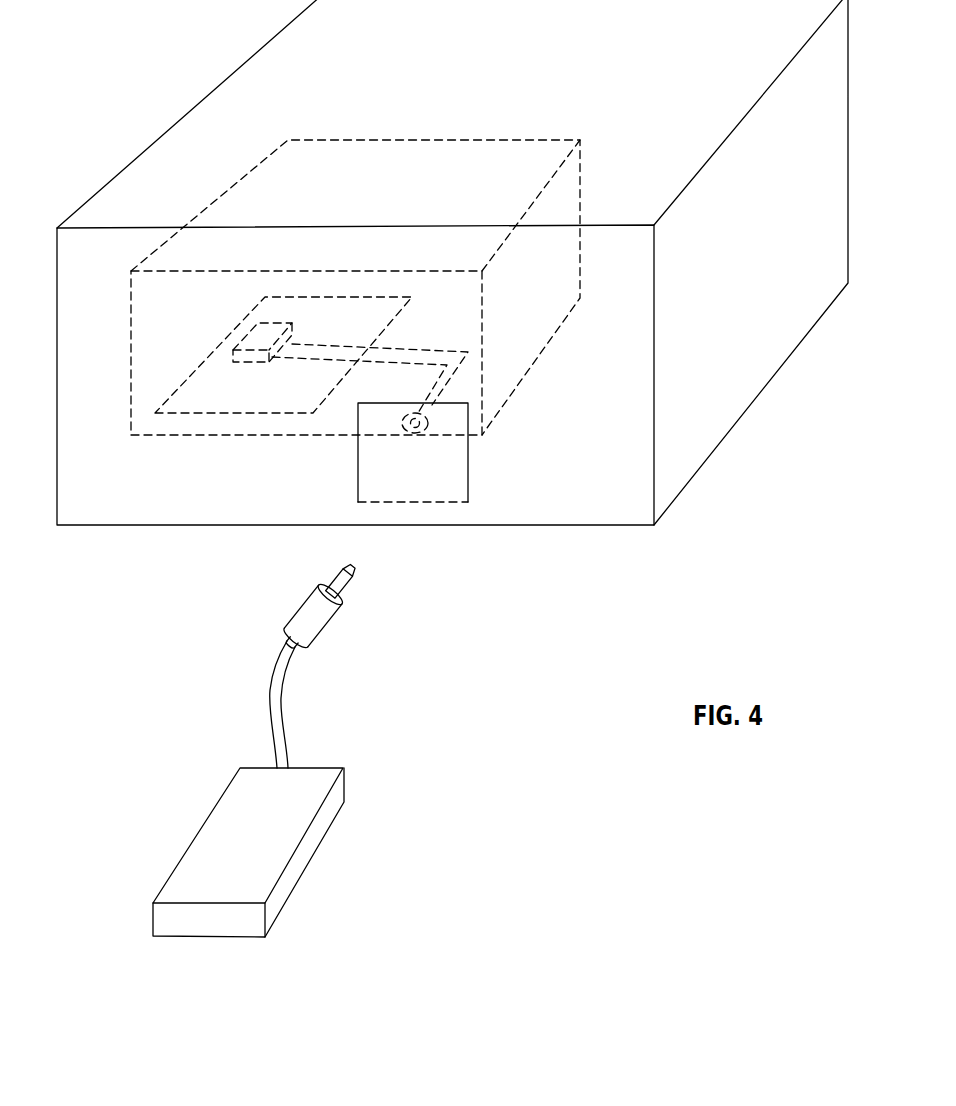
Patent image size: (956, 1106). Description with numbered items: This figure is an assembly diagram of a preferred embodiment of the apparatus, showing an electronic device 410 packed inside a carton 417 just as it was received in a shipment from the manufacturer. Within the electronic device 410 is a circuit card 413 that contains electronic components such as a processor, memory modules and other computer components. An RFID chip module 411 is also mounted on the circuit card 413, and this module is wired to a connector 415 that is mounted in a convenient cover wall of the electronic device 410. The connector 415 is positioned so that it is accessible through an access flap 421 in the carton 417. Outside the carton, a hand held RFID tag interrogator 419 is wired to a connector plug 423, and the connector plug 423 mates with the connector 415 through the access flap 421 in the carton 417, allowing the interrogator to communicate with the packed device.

The electronic device 410 is at (434, 141).
The RFID chip module 411 is at (260, 320).
The circuit card 413 is at (400, 312).
The connector 415 is at (406, 428).
The carton 417 is at (740, 418).
The hand held RFID tag interrogator 419 is at (315, 857).
The access flap 421 is at (463, 472).
The connector plug 423 is at (338, 612).